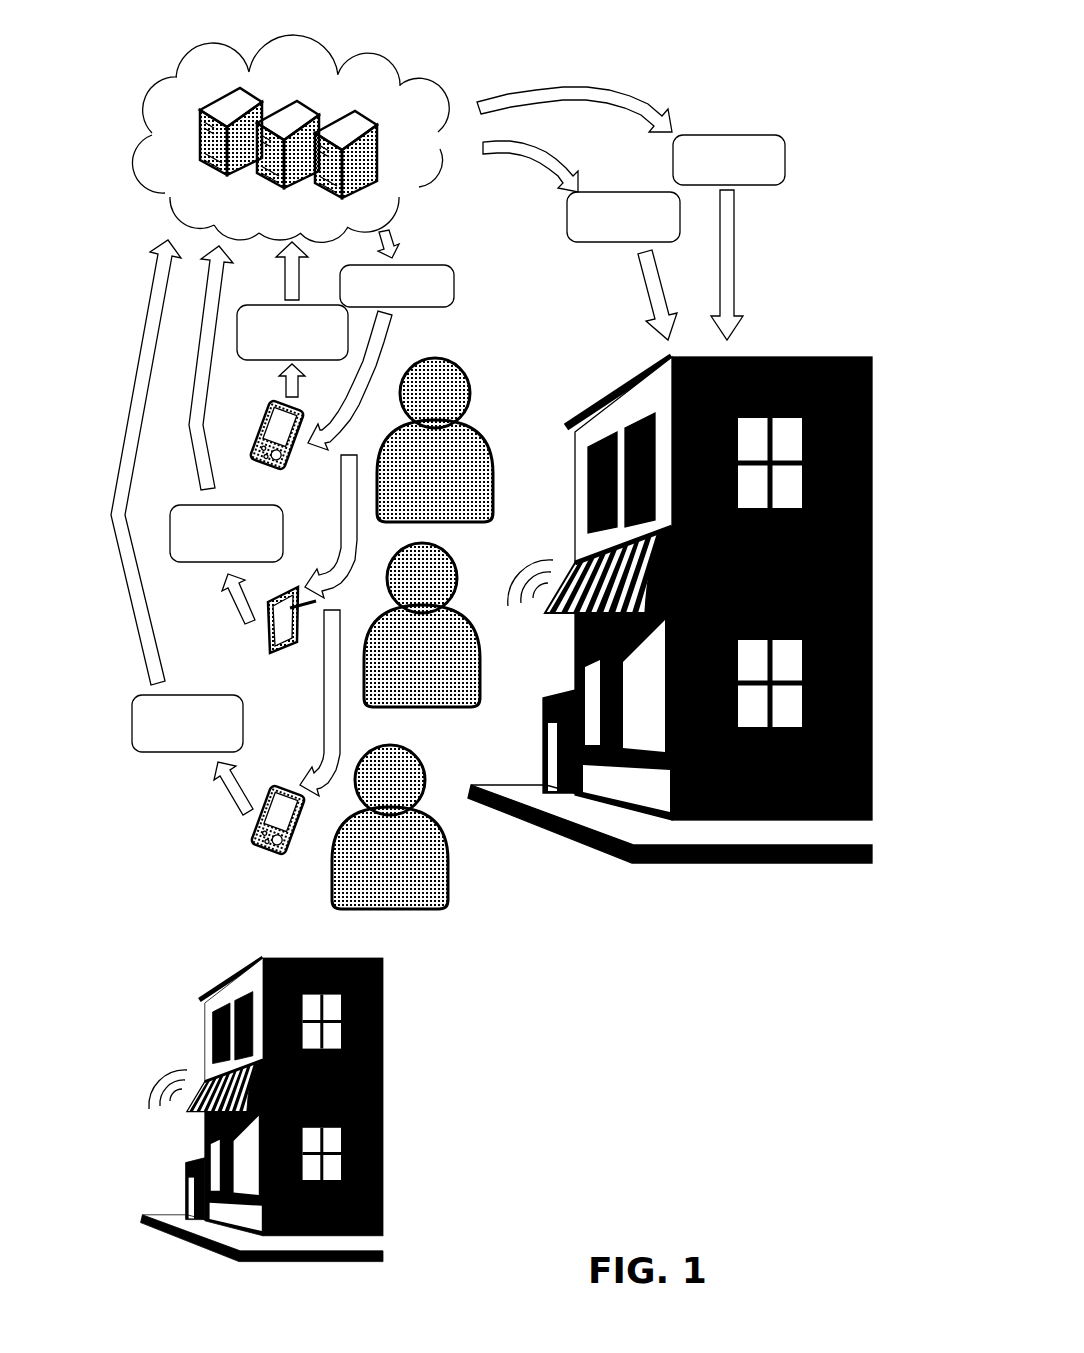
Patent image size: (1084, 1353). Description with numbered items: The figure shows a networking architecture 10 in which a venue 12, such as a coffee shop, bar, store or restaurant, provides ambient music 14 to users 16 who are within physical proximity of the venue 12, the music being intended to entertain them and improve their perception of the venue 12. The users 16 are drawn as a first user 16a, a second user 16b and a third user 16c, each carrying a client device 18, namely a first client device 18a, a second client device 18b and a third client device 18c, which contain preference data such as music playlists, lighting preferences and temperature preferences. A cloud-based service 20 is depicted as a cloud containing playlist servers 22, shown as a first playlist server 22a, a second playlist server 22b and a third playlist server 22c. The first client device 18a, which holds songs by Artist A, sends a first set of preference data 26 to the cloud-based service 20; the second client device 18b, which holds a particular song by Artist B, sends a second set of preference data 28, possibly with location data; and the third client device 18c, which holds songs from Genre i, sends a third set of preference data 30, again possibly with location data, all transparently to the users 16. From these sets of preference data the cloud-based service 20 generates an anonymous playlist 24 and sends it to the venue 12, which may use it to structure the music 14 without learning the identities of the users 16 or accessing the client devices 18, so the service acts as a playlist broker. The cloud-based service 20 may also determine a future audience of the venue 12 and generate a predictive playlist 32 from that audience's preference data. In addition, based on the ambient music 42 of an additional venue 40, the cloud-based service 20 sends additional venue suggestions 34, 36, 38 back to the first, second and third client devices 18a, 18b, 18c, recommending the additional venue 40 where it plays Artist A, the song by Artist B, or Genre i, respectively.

The networking architecture 10 is at (618, 30).
The venue 12 is at (760, 356).
The ambient music 14 is at (510, 578).
The users 16 is at (468, 340).
The first user 16a is at (471, 400).
The second user 16b is at (482, 678).
The third user 16c is at (450, 865).
The client devices 18 is at (283, 878).
The first client device 18a is at (288, 468).
The second client device 18b is at (283, 656).
The third client device 18c is at (263, 855).
The cloud-based service 20 is at (463, 80).
The playlist servers 22 is at (280, 360).
The first playlist server 22a is at (230, 176).
The second playlist server 22b is at (284, 188).
The third playlist server 22c is at (340, 198).
The anonymous playlist 24 is at (567, 225).
The first set of preference data 26 is at (252, 370).
The second set of preference data 28 is at (195, 565).
The third set of preference data 30 is at (160, 755).
The predictive playlist 32 is at (790, 158).
The additional venue suggestion 34 is at (405, 358).
The additional venue suggestion 36 is at (360, 515).
The additional venue suggestion 38 is at (342, 738).
The additional venue 40 is at (383, 1030).
The ambient music of additional venue 42 is at (155, 1078).